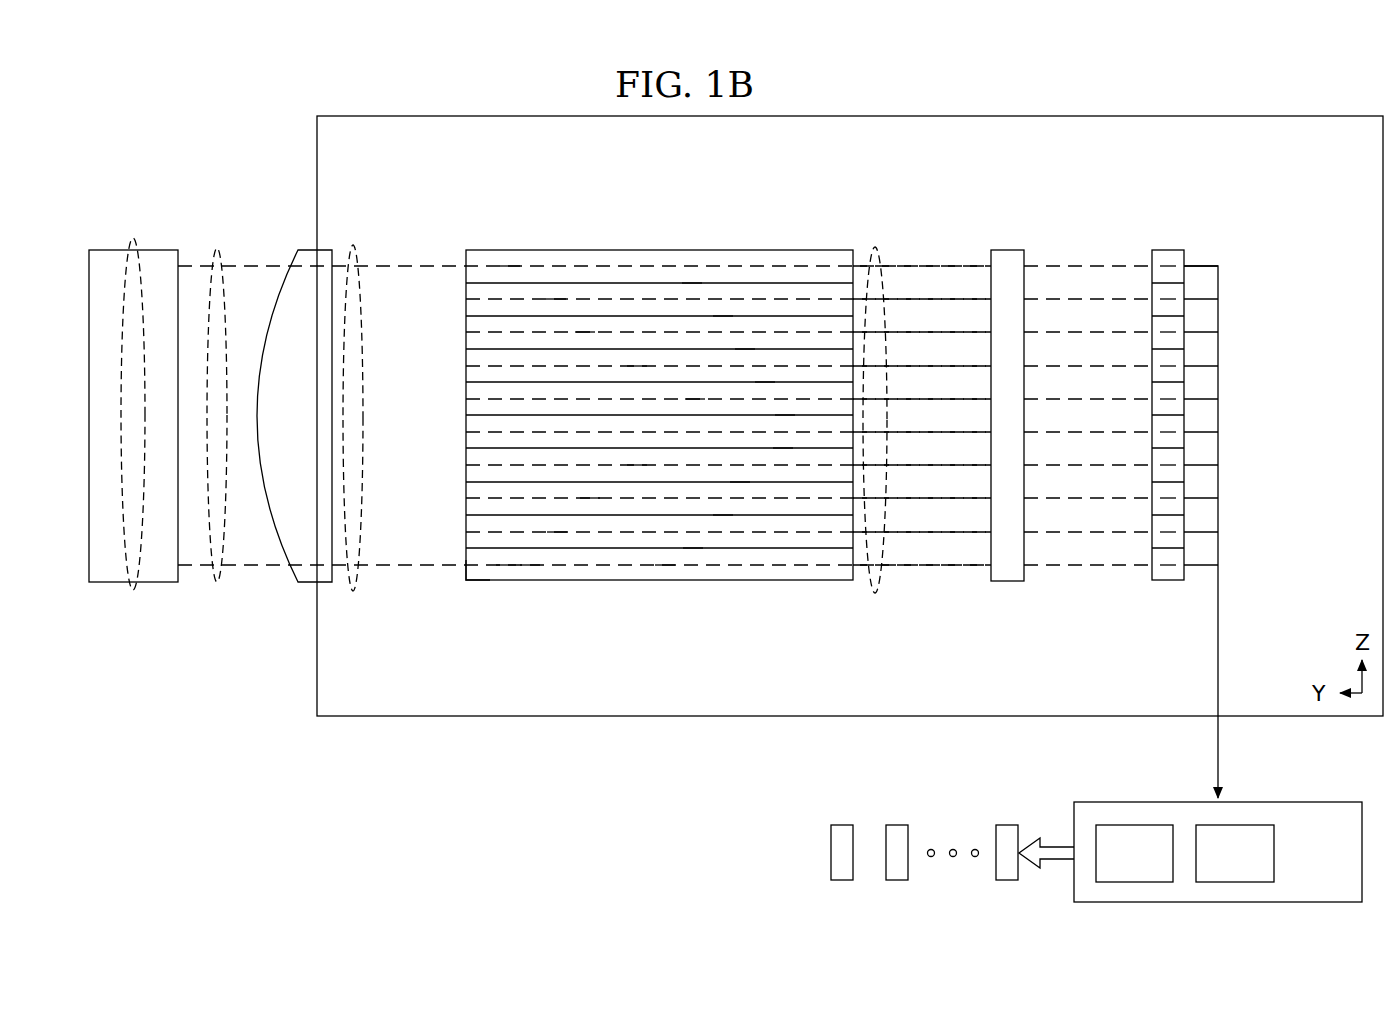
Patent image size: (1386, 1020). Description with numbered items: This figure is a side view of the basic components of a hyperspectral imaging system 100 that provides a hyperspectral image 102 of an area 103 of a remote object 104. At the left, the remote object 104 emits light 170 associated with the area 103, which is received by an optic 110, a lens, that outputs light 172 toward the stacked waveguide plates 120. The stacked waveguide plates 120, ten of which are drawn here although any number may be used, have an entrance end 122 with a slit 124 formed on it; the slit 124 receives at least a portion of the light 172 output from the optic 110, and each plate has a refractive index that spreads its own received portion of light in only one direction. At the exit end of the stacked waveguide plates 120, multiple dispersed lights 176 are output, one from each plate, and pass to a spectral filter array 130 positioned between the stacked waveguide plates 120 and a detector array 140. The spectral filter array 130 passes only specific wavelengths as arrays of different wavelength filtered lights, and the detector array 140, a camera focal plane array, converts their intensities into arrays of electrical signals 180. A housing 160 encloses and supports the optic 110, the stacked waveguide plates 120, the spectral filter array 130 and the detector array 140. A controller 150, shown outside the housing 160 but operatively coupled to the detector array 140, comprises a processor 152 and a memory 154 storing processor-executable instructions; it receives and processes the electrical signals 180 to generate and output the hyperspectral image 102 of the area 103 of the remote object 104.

The hyperspectral imaging system 100 is at (412, 74).
The hyperspectral image 102 is at (997, 908).
The area 103 is at (133, 250).
The remote object 104 is at (117, 603).
The optic 110 is at (297, 252).
The stacked waveguide plates 120 is at (478, 242).
The entrance end 122 is at (463, 583).
The slit 124 is at (364, 179).
The spectral filter array 130 is at (1008, 250).
The detector array 140 is at (1164, 247).
The controller 150 is at (1338, 866).
The processor 152 is at (1154, 866).
The memory 154 is at (1255, 866).
The housing 160 is at (526, 114).
The light 170 is at (217, 252).
The light 172 is at (353, 252).
The dispersed lights 176 is at (863, 147).
The electrical signals 180 is at (1202, 238).